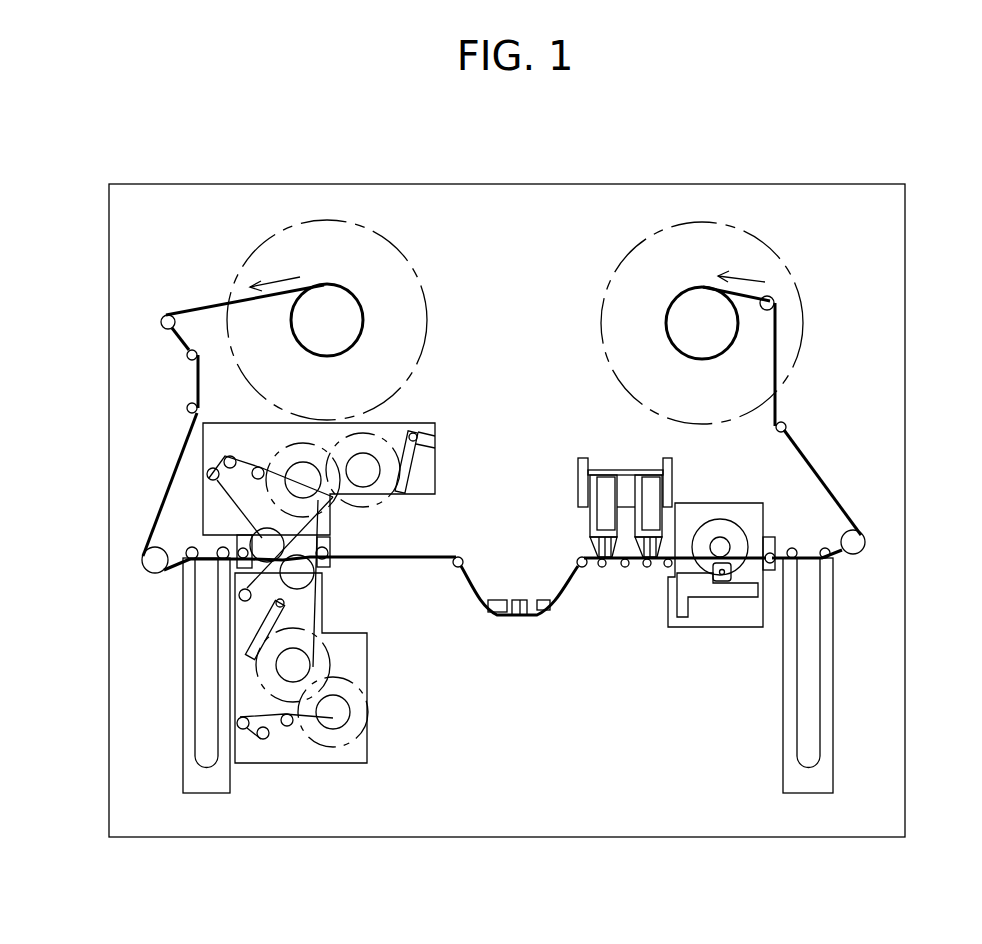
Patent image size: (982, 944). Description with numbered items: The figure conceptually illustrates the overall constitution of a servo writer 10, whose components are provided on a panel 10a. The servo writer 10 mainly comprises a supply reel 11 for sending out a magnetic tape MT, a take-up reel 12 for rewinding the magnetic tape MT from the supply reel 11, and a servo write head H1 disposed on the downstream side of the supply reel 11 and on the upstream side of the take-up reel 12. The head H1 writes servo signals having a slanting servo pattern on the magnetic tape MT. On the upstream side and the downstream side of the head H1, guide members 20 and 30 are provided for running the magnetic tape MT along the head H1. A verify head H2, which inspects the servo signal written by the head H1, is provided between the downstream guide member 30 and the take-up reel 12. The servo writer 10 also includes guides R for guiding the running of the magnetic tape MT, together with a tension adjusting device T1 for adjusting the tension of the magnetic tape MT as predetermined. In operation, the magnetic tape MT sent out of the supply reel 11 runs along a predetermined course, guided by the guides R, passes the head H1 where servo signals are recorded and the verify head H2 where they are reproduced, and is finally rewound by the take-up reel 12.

The servo writer 10 is at (520, 284).
The panel 10a is at (733, 752).
The supply reel 11 is at (327, 312).
The take-up reel 12 is at (698, 312).
The guide member 20 is at (494, 617).
The guide member 30 is at (543, 616).
The servo write head H1 is at (518, 617).
The verify head H2 is at (603, 568).
The magnetic tape MT is at (203, 307).
The guides R is at (187, 356).
The tension adjusting device T1 is at (174, 683).